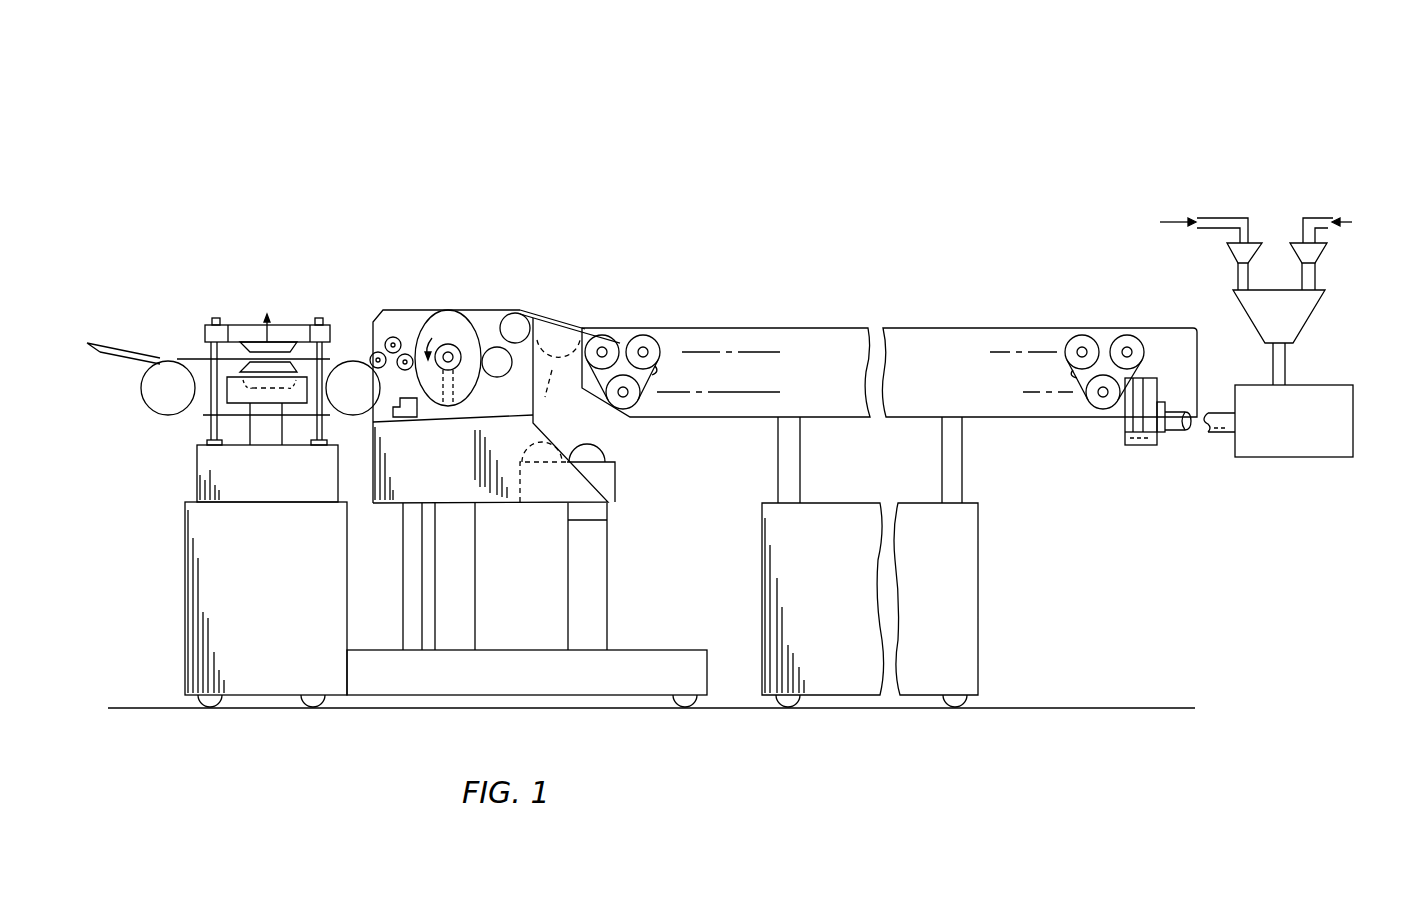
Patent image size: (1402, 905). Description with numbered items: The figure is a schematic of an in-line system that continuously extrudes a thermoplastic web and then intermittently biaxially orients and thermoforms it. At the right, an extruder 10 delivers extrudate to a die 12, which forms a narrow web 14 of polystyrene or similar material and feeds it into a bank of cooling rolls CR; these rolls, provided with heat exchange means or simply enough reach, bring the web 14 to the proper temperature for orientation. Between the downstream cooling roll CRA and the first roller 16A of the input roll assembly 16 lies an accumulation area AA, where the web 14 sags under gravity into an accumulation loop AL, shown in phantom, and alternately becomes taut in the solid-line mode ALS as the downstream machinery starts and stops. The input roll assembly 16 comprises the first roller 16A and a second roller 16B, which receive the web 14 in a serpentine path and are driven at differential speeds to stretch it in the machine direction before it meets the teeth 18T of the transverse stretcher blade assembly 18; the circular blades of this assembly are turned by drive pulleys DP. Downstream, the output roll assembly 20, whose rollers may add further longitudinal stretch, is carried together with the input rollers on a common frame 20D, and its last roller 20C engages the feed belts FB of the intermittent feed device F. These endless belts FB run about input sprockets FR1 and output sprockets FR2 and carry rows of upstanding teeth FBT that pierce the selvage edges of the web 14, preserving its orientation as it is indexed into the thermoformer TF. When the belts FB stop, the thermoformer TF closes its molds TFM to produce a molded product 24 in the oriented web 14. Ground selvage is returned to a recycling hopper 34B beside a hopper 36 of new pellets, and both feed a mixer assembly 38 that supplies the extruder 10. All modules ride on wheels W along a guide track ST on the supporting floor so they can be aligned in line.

The extruder 10 is at (1277, 460).
The die 12 is at (1155, 366).
The web 14 is at (594, 335).
The input roll assembly 16 is at (520, 360).
The first roller 16A is at (527, 336).
The second roller 16B is at (509, 370).
The transverse stretcher blade assembly 18 is at (458, 336).
The teeth 18T is at (473, 397).
The output roll assembly 20 is at (396, 333).
The third output roll 20C is at (373, 357).
The common frame 20D is at (410, 311).
The molded product 24 is at (130, 355).
The recycling hopper 34B is at (1292, 276).
The hopper 36 is at (1349, 276).
The mixer assembly 38 is at (1287, 331).
The thermoformer TF is at (187, 312).
The molds TFM is at (243, 395).
The feed belts FB is at (202, 418).
The upstanding teeth FBT is at (347, 420).
The input sprockets FR1 is at (370, 397).
The output sprockets FR2 is at (186, 397).
The intermittent feed device F is at (339, 358).
The drive pulleys DP is at (452, 350).
The taut solid line mode ALS is at (545, 327).
The accumulation area AA is at (572, 349).
The accumulation loop AL is at (548, 388).
The downstream cooling roll CRA is at (600, 360).
The cooling rolls CR is at (627, 334).
The wheels W is at (302, 712).
The guide track ST is at (732, 708).